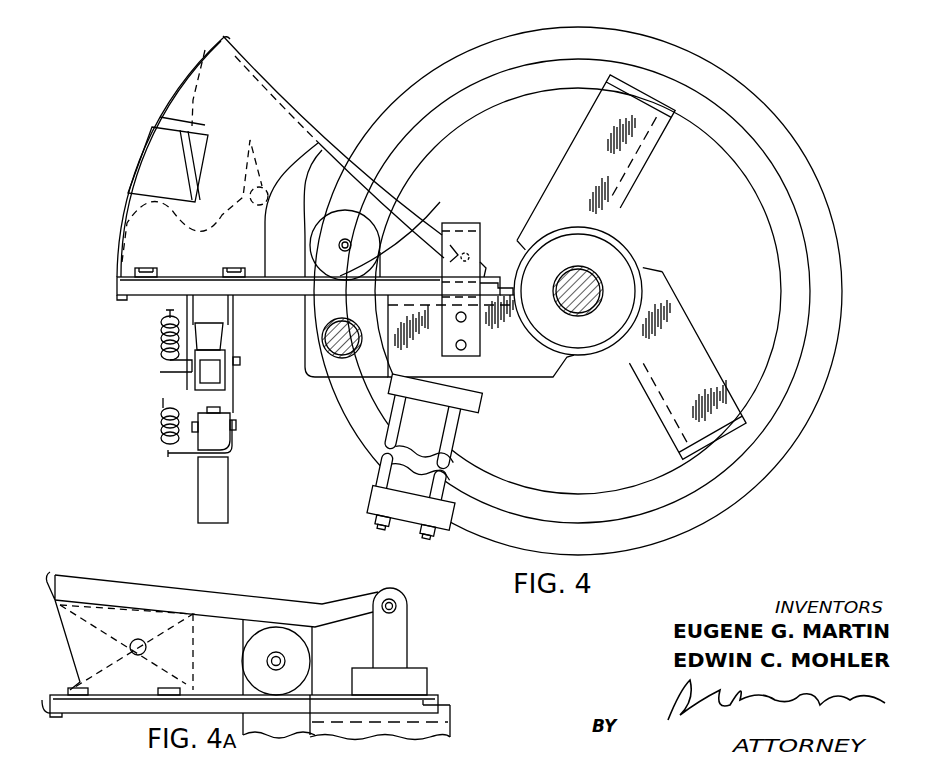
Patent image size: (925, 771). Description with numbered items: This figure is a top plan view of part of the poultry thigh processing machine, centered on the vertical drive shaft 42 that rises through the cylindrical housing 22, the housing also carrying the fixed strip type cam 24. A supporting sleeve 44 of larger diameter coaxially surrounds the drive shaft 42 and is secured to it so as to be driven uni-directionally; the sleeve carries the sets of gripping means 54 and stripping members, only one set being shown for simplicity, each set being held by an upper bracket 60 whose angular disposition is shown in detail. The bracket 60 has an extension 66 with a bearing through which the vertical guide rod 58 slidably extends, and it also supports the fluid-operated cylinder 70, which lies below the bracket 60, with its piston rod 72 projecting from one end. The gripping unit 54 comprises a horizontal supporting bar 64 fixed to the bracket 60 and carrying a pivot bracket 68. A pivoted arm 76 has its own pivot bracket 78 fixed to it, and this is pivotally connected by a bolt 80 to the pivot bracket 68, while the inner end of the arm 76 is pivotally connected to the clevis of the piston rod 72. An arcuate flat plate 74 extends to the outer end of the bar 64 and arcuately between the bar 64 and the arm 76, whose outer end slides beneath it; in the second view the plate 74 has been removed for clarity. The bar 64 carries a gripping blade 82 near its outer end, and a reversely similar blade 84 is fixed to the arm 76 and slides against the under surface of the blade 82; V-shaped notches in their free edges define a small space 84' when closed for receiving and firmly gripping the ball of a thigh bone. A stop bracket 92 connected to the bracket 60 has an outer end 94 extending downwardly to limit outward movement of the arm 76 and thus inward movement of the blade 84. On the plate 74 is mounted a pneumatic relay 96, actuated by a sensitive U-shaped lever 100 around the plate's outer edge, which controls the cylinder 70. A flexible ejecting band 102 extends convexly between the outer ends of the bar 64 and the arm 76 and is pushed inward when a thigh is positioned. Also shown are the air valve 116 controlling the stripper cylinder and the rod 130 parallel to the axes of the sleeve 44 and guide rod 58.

In FIG. 4, the cylindrical housing 22 is at (765, 287).
In FIG. 4, the strip type cam 24 is at (742, 143).
In FIG. 4, the vertical drive shaft 42 is at (590, 278).
In FIG. 4, the supporting sleeve 44 is at (590, 357).
In FIG. 4, the gripping means 54 is at (280, 83).
In FIG. 4, the vertical guide rod 58 is at (342, 350).
In FIG. 4, the upper bracket 60 is at (503, 365).
In FIG. 4A, the upper bracket 60 is at (435, 727).
In FIG. 4, the horizontal supporting bar 64 is at (162, 288).
In FIG. 4A, the horizontal supporting bar 64 is at (120, 705).
In FIG. 4, the extension 66 is at (315, 353).
In FIG. 4, the pivot bracket 68 is at (413, 238).
In FIG. 4A, the pivot bracket 68 is at (305, 690).
In FIG. 4, the fluid-operated cylinder 70 is at (437, 423).
In FIG. 4A, the fluid-operated cylinder 70 is at (430, 680).
In FIG. 4, the piston rod 72 is at (485, 262).
In FIG. 4A, the piston rod 72 is at (398, 628).
In FIG. 4, the arcuate flat plate 74 is at (273, 213).
In FIG. 4, the pivoted arm 76 is at (330, 152).
In FIG. 4A, the pivoted arm 76 is at (218, 598).
In FIG. 4, the pivot bracket 78 is at (392, 233).
In FIG. 4A, the pivot bracket 78 is at (302, 630).
In FIG. 4, the bolt 80 is at (350, 241).
In FIG. 4A, the bolt 80 is at (279, 652).
In FIG. 4, the gripping blade 82 is at (140, 227).
In FIG. 4A, the gripping blade 82 is at (90, 658).
In FIG. 4, the gripping blade 84 is at (194, 156).
In FIG. 4A, the gripping blade 84 is at (116, 646).
In FIG. 4A, the small space 84' is at (168, 606).
In FIG. 4, the stop bracket 92 is at (472, 333).
In FIG. 4, the outer end 94 is at (463, 230).
In FIG. 4, the pneumatic relay 96 is at (178, 172).
In FIG. 4, the lever 100 is at (148, 173).
In FIG. 4, the flexible ejecting band 102 is at (157, 112).
In FIG. 4A, the flexible ejecting band 102 is at (128, 600).
In FIG. 4, the air valve 116 is at (208, 490).
In FIG. 4, the rod 130 is at (212, 313).